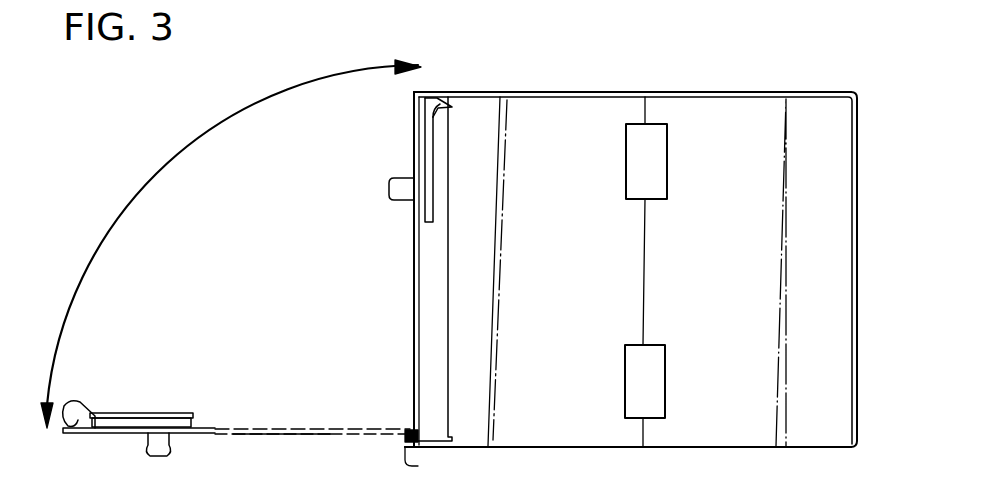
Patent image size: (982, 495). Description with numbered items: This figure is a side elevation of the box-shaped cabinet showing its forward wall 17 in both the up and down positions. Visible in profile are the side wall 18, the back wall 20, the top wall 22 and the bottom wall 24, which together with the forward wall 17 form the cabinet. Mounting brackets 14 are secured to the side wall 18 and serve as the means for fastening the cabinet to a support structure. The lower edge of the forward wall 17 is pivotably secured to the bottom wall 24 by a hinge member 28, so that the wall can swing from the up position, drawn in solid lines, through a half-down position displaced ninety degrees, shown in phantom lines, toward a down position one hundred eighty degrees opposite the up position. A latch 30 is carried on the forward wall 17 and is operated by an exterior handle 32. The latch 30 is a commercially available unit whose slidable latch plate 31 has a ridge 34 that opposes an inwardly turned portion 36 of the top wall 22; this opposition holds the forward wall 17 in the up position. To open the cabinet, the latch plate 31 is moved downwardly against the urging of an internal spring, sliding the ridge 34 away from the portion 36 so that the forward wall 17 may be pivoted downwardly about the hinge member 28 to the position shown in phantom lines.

The mounting brackets 14 is at (626, 168).
The forward wall 17 is at (413, 333).
The side wall 18 is at (572, 301).
The back wall 20 is at (857, 282).
The top wall 22 is at (613, 93).
The bottom wall 24 is at (530, 447).
The hinge member 28 is at (428, 465).
The latch 30 is at (433, 190).
The latch plate 31 is at (425, 152).
The exterior handle 32 is at (395, 200).
The ridge 34 is at (108, 390).
The inwardly turned portion 36 is at (428, 108).